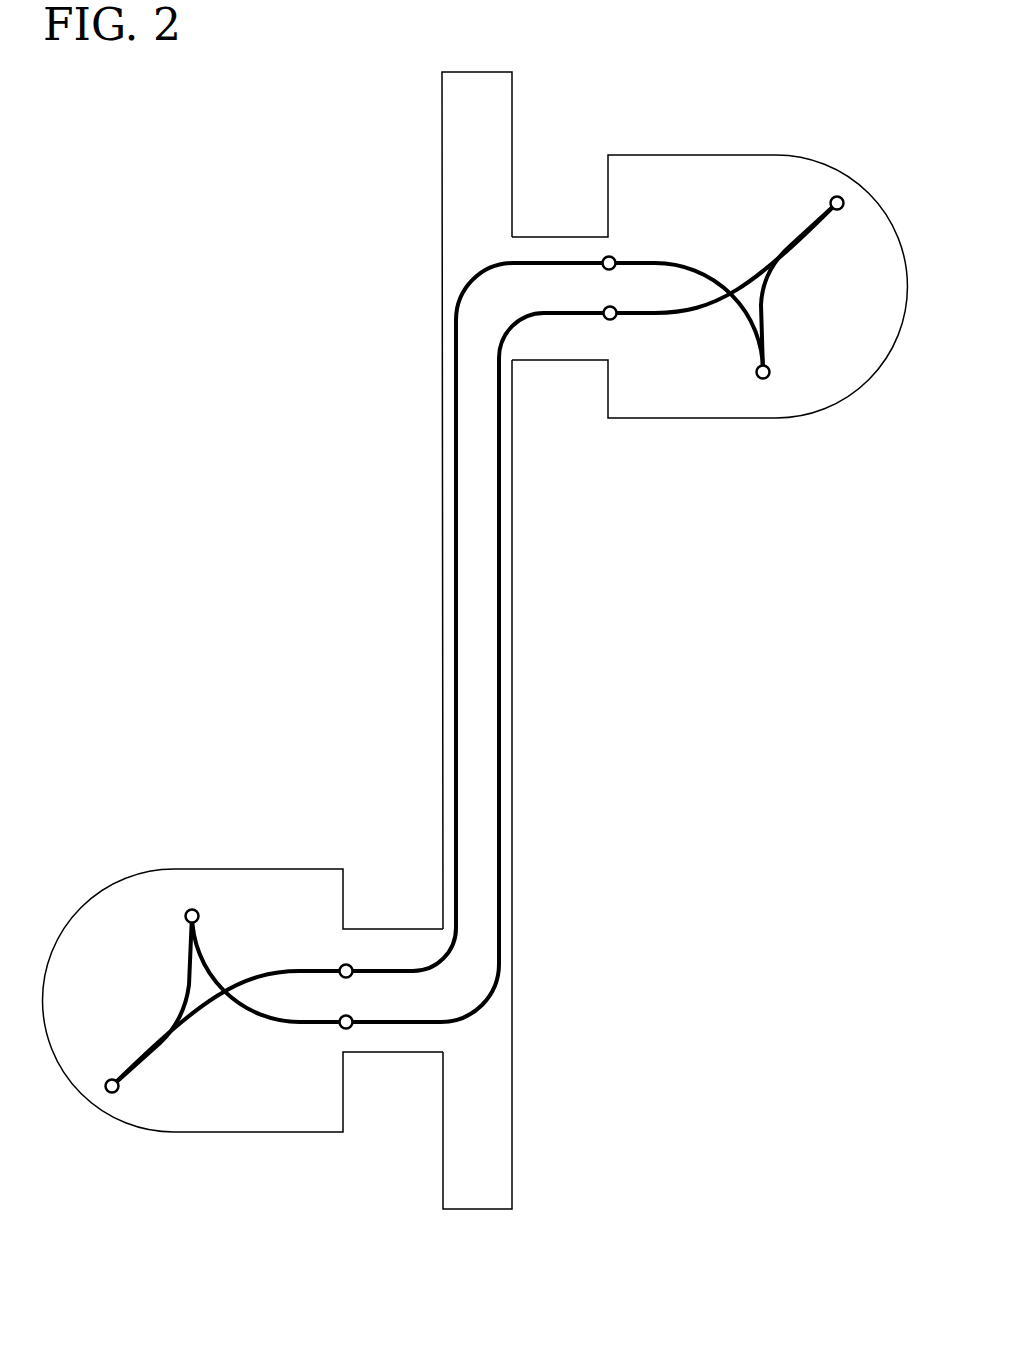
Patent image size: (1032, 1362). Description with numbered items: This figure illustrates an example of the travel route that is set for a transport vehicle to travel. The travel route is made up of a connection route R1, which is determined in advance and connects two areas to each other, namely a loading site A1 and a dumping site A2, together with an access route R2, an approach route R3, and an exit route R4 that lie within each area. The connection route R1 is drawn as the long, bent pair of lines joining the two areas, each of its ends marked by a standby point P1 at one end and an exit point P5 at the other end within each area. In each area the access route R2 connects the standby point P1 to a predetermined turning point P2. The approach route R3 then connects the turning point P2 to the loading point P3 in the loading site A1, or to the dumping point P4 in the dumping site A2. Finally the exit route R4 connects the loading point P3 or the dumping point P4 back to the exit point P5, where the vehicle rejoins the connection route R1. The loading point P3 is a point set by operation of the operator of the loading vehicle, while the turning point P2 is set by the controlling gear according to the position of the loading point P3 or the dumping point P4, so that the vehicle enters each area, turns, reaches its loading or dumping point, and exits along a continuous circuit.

The loading site A1 is at (717, 155).
The dumping site A2 is at (202, 1132).
The standby point P1 is at (604, 258).
The turning point P2 is at (763, 379).
The loading point P3 is at (838, 196).
The dumping point P4 is at (112, 1093).
The exit point P5 is at (609, 320).
The connection route R1 is at (455, 378).
The access route R2 is at (743, 317).
The approach route R3 is at (771, 285).
The exit route R4 is at (766, 264).